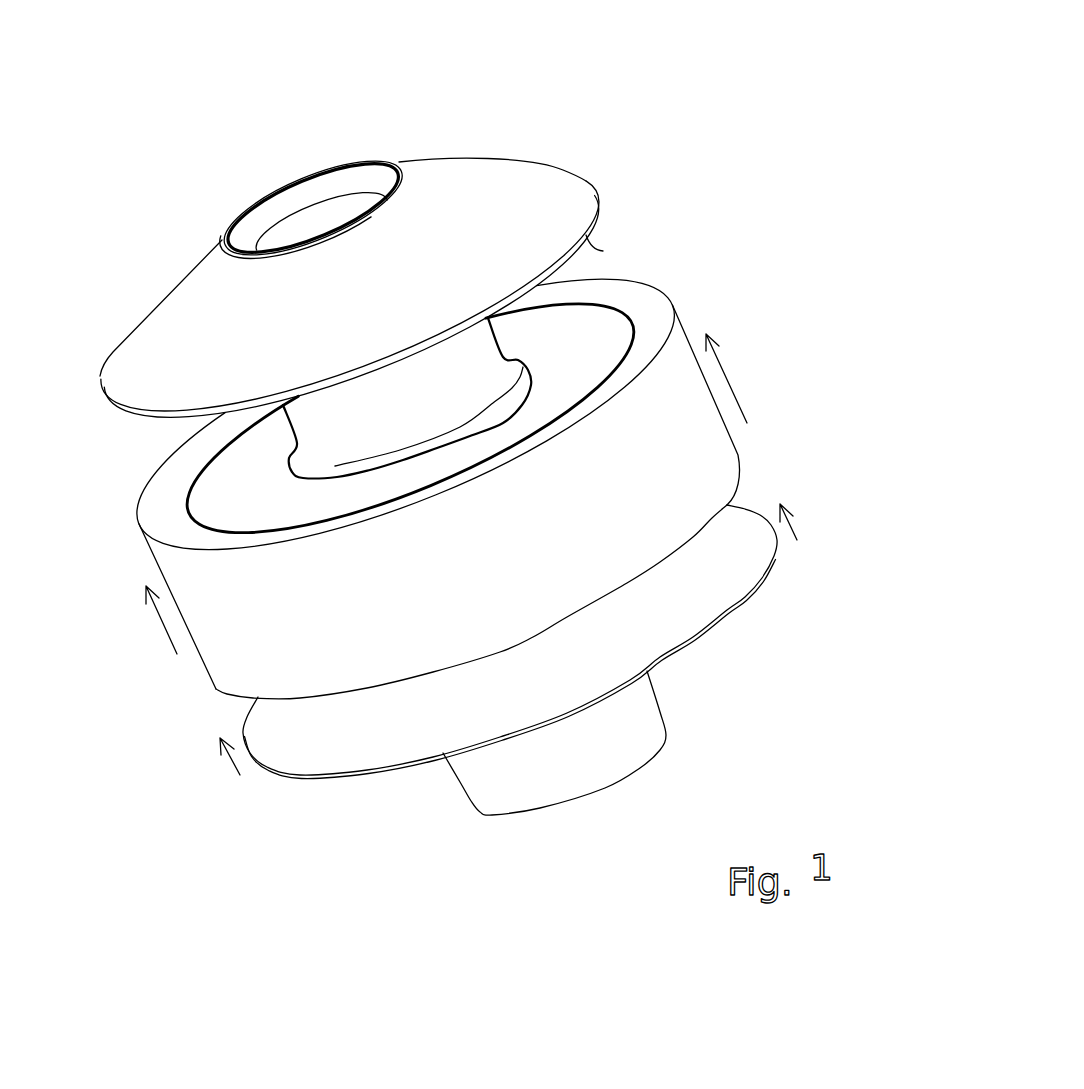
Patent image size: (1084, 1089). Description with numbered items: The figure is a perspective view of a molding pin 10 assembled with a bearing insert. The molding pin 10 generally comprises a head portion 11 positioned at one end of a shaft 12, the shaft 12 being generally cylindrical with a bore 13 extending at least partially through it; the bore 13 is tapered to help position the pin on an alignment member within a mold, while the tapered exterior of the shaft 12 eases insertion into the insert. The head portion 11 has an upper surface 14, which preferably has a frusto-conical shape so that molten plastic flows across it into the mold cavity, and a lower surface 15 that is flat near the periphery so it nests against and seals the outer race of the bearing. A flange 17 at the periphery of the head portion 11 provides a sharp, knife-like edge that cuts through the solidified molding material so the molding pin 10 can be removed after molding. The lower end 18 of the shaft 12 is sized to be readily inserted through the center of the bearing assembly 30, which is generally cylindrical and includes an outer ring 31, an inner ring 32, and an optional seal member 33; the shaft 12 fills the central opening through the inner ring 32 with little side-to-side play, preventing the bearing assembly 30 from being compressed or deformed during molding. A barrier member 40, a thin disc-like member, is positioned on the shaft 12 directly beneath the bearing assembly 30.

The molding pin 10 is at (622, 100).
The head portion 11 is at (447, 172).
The shaft 12 is at (322, 427).
The bore 13 is at (305, 194).
The upper surface 14 is at (163, 358).
The lower surface 15 is at (603, 251).
The flange 17 is at (107, 390).
The lower end 18 is at (668, 748).
The bearing assembly 30 is at (700, 388).
The outer ring 31 is at (167, 530).
The inner ring 32 is at (530, 366).
The seal member 33 is at (590, 348).
The barrier member 40 is at (748, 538).